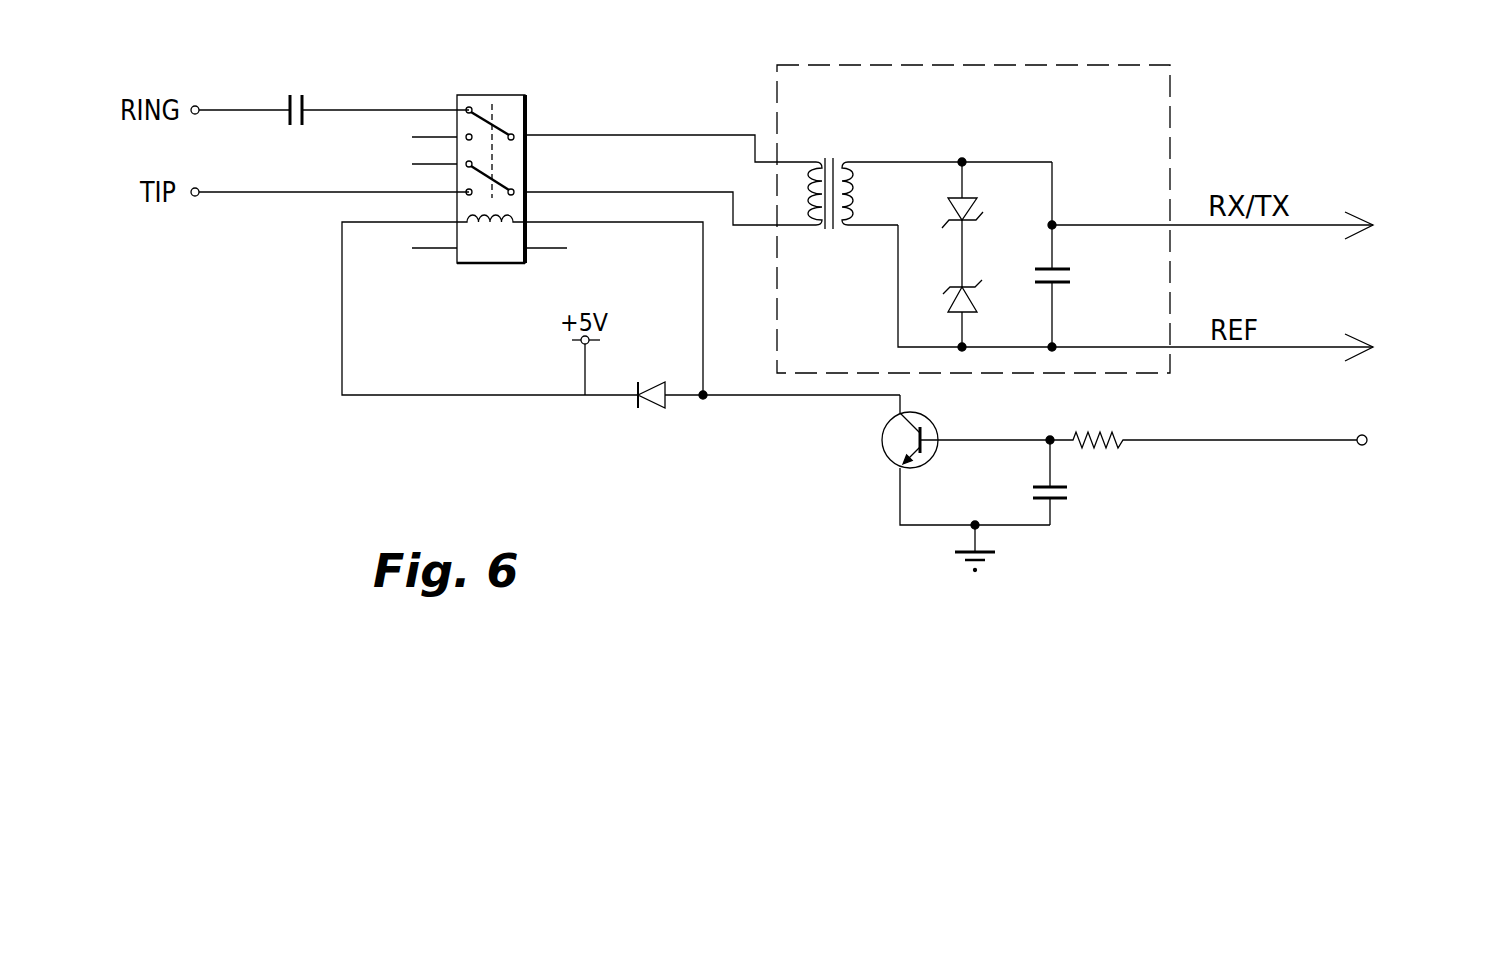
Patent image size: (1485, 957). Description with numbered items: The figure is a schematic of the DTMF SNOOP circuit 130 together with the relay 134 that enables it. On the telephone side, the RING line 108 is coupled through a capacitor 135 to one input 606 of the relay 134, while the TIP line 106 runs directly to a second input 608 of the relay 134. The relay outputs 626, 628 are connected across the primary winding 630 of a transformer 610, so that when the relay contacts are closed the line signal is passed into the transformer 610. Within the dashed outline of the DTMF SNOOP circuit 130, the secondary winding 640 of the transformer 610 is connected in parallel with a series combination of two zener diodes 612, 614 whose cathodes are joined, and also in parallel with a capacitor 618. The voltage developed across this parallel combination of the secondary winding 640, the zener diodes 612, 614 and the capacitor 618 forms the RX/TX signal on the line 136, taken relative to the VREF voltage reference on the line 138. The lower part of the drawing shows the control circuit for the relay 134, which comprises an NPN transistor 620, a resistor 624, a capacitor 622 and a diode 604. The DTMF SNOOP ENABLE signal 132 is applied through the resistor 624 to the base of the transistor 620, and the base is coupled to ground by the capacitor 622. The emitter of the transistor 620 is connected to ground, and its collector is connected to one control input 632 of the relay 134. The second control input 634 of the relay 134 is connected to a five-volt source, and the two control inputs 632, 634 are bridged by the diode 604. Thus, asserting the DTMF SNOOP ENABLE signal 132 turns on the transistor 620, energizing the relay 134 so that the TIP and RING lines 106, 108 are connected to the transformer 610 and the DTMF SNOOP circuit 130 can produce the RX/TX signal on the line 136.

The TIP line 106 is at (238, 195).
The RING line 108 is at (228, 108).
The DTMF SNOOP circuit 130 is at (1082, 65).
The DTMF SNOOP ENABLE signal 132 is at (1440, 534).
The relay 134 is at (507, 95).
The capacitor 135 is at (300, 93).
The RX/TX signal line 136 is at (1317, 223).
The VREF voltage reference line 138 is at (1305, 345).
The diode 604 is at (662, 410).
The relay input 606 is at (440, 108).
The second relay input 608 is at (400, 189).
The transformer 610 is at (860, 207).
The zener diode 612 is at (970, 203).
The zener diode 614 is at (975, 303).
The capacitor 618 is at (1075, 272).
The NPN transistor 620 is at (930, 420).
The capacitor 622 is at (1072, 493).
The resistor 624 is at (1095, 432).
The relay output 626 is at (535, 135).
The relay output 628 is at (535, 192).
The primary winding 630 is at (803, 182).
The relay control input 632 is at (540, 222).
The second relay control input 634 is at (412, 221).
The secondary winding 640 is at (858, 180).